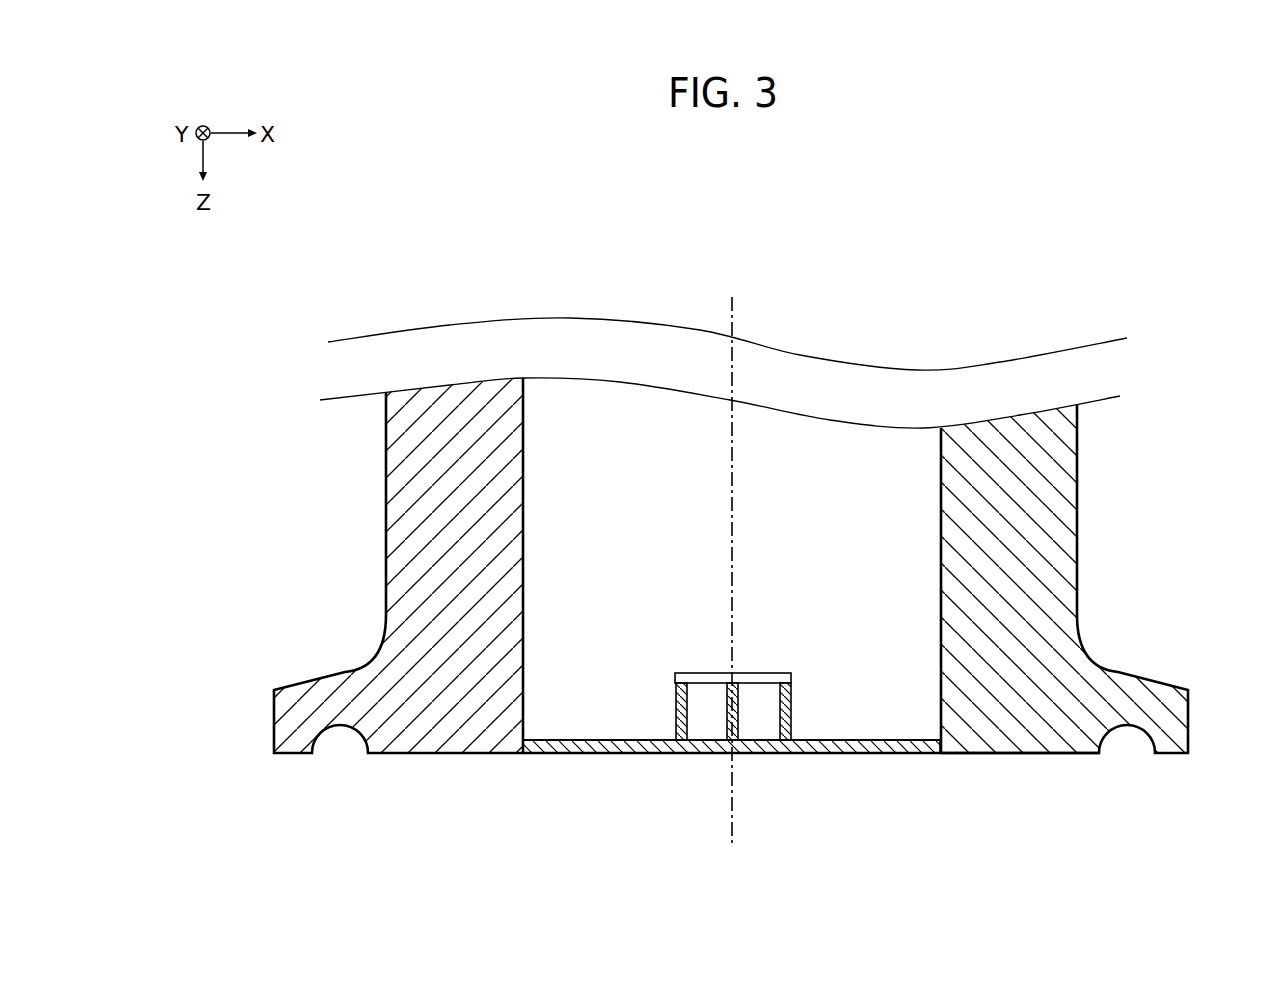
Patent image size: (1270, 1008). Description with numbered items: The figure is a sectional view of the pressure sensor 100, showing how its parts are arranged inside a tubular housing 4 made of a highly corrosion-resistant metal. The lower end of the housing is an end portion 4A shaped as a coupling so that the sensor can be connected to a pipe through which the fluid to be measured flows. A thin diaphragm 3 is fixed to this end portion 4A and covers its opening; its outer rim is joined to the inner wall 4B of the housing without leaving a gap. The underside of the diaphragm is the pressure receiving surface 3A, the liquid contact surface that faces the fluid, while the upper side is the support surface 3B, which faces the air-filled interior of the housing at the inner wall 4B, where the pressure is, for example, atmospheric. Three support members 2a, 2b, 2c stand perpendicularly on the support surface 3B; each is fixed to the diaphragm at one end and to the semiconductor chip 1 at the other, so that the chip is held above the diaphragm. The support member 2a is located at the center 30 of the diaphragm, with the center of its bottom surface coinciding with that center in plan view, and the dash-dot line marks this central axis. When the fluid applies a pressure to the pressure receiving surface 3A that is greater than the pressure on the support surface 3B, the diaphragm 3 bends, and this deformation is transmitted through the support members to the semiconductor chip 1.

The pressure sensor 100 is at (1165, 256).
The center of the diaphragm 30 is at (736, 558).
The housing 4 is at (386, 472).
The end portion of the housing 4A is at (1053, 753).
The inner wall of the housing 4B is at (940, 498).
The diaphragm 3 is at (525, 755).
The pressure receiving surface 3A is at (848, 753).
The support surface 3B is at (904, 738).
The semiconductor chip 1 is at (677, 682).
The support member 2a is at (726, 731).
The support member 2b is at (673, 730).
The support member 2c is at (772, 731).